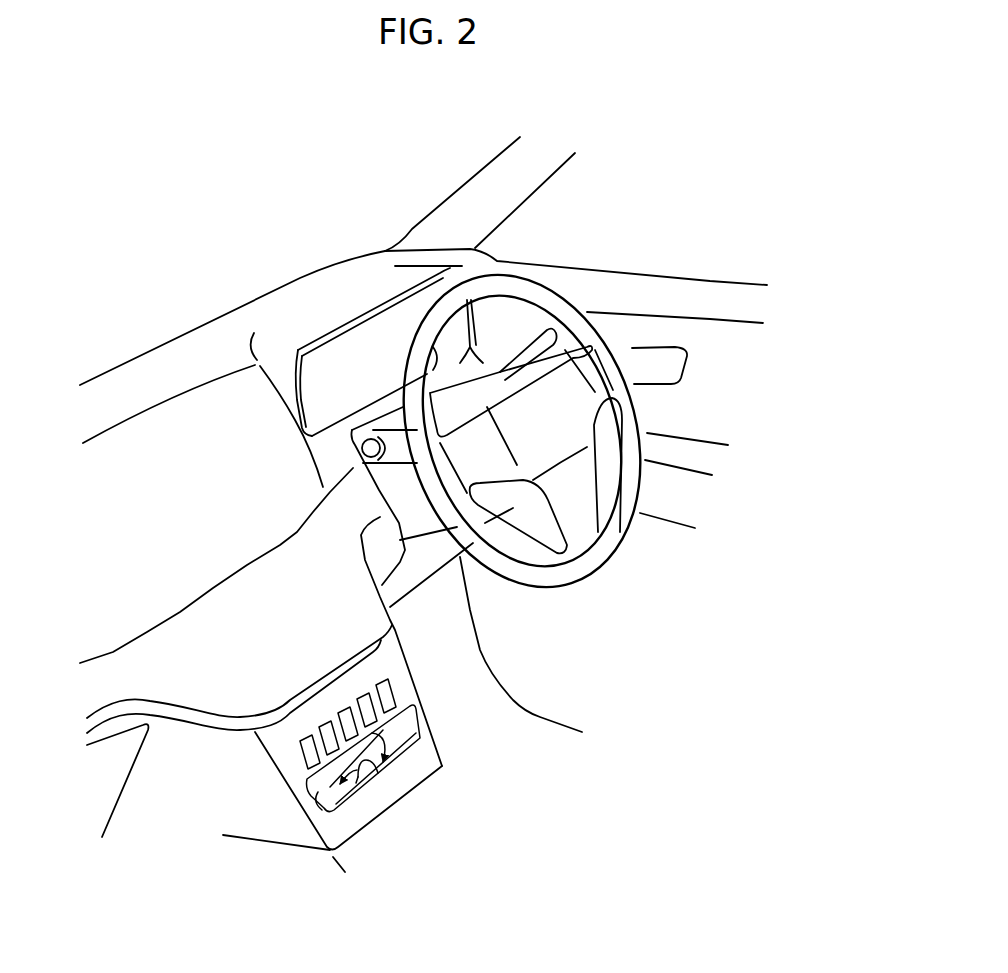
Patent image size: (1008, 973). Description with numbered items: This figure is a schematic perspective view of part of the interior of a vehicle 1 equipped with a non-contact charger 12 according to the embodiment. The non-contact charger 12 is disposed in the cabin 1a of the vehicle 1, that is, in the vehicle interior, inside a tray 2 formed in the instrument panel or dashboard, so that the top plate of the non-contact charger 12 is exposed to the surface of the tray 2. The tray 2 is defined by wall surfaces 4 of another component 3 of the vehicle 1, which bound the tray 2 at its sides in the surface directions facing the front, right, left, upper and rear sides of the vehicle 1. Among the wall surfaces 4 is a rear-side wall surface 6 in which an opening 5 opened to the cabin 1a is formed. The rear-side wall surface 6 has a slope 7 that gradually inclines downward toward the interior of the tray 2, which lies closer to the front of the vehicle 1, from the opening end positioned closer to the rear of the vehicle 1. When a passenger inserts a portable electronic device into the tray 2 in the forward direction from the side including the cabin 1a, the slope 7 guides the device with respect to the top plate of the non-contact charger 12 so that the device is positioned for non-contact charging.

The vehicle 1 is at (675, 193).
The cabin 1a is at (690, 623).
The tray 2 is at (408, 738).
The another component 3 is at (297, 764).
The wall surfaces 4 is at (404, 723).
The opening 5 is at (333, 800).
The rear-side wall surface 6 is at (402, 743).
The slope 7 is at (378, 773).
The non-contact charger 12 is at (357, 785).